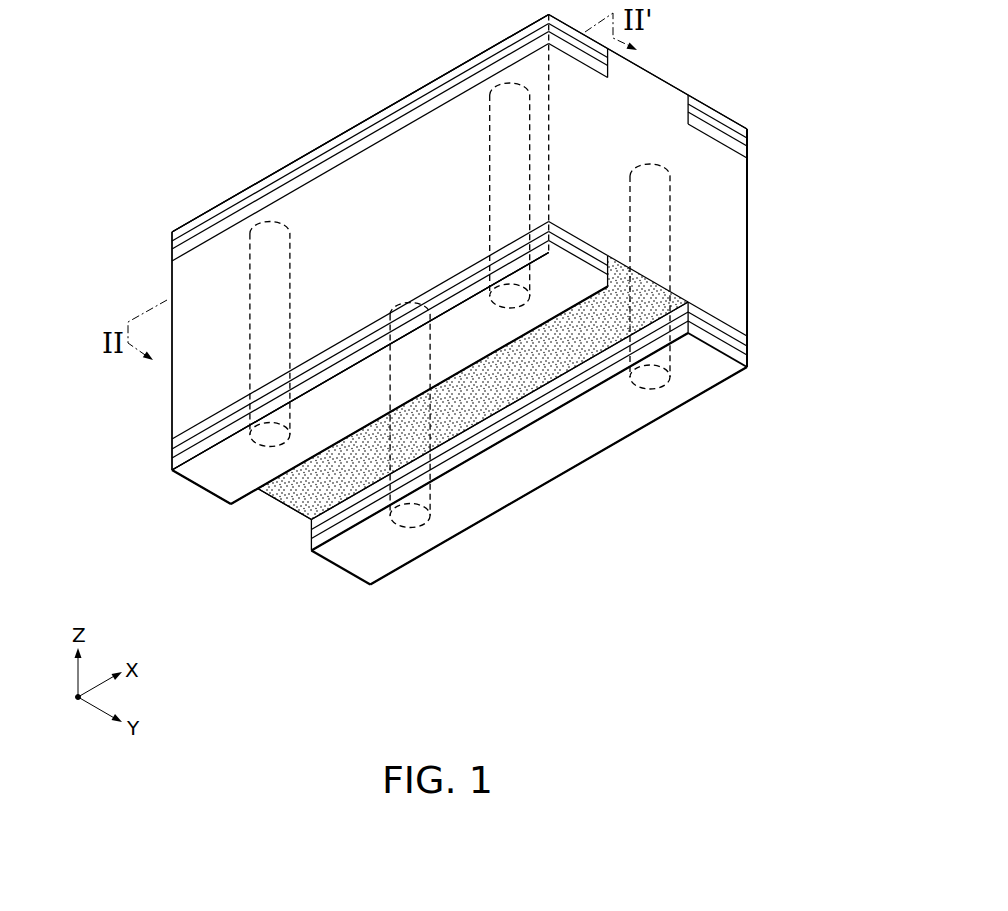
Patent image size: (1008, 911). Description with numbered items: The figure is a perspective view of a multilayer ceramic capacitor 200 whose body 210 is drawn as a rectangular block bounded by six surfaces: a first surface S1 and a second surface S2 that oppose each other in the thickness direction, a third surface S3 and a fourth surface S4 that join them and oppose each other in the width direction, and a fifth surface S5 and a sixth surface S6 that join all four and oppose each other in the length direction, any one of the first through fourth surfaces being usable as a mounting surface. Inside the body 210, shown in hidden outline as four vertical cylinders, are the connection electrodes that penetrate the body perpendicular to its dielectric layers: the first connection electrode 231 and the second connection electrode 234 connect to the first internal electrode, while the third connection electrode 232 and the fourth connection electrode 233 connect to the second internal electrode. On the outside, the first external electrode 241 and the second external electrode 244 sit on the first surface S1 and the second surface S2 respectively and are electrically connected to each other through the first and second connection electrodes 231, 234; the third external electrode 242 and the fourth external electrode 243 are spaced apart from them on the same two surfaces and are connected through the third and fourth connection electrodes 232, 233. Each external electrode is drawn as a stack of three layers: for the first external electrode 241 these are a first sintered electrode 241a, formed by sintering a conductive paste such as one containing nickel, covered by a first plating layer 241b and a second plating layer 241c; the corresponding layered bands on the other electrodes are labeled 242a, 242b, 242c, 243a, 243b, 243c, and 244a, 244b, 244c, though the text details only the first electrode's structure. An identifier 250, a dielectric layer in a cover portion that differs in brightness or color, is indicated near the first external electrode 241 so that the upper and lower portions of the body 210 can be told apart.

The multilayer ceramic capacitor 200 is at (262, 57).
The body 210 is at (298, 515).
The first connection electrode 231 is at (268, 442).
The third connection electrode 232 is at (412, 518).
The fourth connection electrode 233 is at (652, 378).
The second connection electrode 234 is at (512, 300).
The first external electrode 241 is at (318, 375).
The first sintered electrode 241a is at (172, 447).
The first plating layer 241b is at (172, 456).
The second plating layer 241c is at (172, 466).
The third external electrode 242 is at (605, 420).
The first layer of second external electrode 242a is at (749, 339).
The second layer of second external electrode 242b is at (749, 350).
The third layer of second external electrode 242c is at (749, 362).
The fourth external electrode 243 is at (793, 146).
The first layer of third external electrode 243a is at (748, 151).
The second layer of third external electrode 243b is at (748, 141).
The third layer of third external electrode 243c is at (749, 129).
The second external electrode 244 is at (318, 160).
The first layer of fourth external electrode 244a is at (172, 257).
The second layer of fourth external electrode 244b is at (172, 244).
The third layer of fourth external electrode 244c is at (172, 232).
The identifier 250 is at (172, 437).
The first surface S1 is at (303, 203).
The second surface S2 is at (364, 480).
The third surface S3 is at (228, 244).
The fourth surface S4 is at (503, 480).
The fifth surface S5 is at (277, 499).
The sixth surface S6 is at (632, 126).